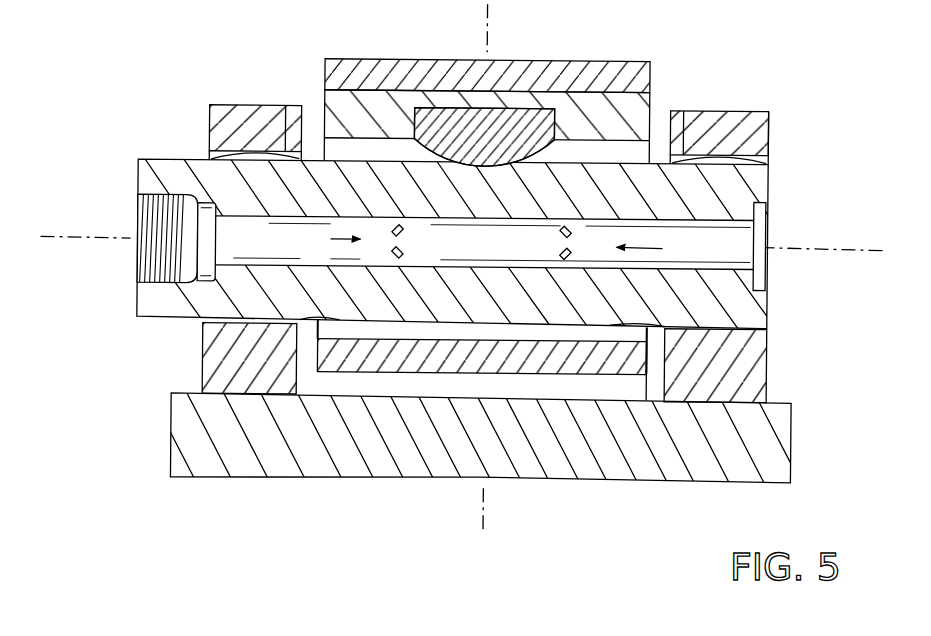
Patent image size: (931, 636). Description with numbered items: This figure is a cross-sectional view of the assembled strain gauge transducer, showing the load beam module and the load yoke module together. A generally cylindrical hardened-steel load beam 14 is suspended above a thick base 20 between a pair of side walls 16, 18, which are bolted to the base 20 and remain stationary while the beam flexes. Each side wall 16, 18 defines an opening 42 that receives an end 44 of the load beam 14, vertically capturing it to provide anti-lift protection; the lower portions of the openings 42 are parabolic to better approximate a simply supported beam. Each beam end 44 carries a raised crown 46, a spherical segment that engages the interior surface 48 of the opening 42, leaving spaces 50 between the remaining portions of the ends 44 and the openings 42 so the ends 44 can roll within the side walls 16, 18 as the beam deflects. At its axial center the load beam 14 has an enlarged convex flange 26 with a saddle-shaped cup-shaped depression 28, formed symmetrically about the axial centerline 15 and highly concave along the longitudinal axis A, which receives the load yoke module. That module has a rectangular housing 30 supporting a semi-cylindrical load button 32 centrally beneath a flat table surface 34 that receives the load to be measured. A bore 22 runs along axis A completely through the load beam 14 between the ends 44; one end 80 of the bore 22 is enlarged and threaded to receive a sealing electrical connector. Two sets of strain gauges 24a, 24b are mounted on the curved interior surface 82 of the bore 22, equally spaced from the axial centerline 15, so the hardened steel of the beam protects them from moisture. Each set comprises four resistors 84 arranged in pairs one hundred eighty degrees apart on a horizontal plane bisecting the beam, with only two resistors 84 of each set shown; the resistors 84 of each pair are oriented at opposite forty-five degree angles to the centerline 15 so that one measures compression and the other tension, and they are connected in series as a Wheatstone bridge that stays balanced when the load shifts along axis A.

The load beam 14 is at (745, 189).
The axial centerline 15 is at (487, 500).
The side wall 16 is at (768, 114).
The side wall 18 is at (208, 106).
The base 20 is at (355, 470).
The bore 22 is at (740, 252).
The strain gauge set 24a is at (666, 252).
The strain gauge set 24b is at (317, 239).
The convex flange 26 is at (412, 140).
The cup-shaped depression 28 is at (484, 176).
The rectangular housing 30 is at (583, 362).
The load button 32 is at (533, 150).
The table surface 34 is at (565, 60).
The opening 42 is at (286, 152).
The load beam end 44 is at (263, 184).
The raised crown 46 is at (247, 323).
The interior surface 48 is at (756, 330).
The space 50 is at (222, 155).
The enlarged threaded end 80 is at (148, 270).
The interior surface 82 is at (648, 222).
The resistor 84 is at (405, 253).
The longitudinal axis A is at (855, 247).